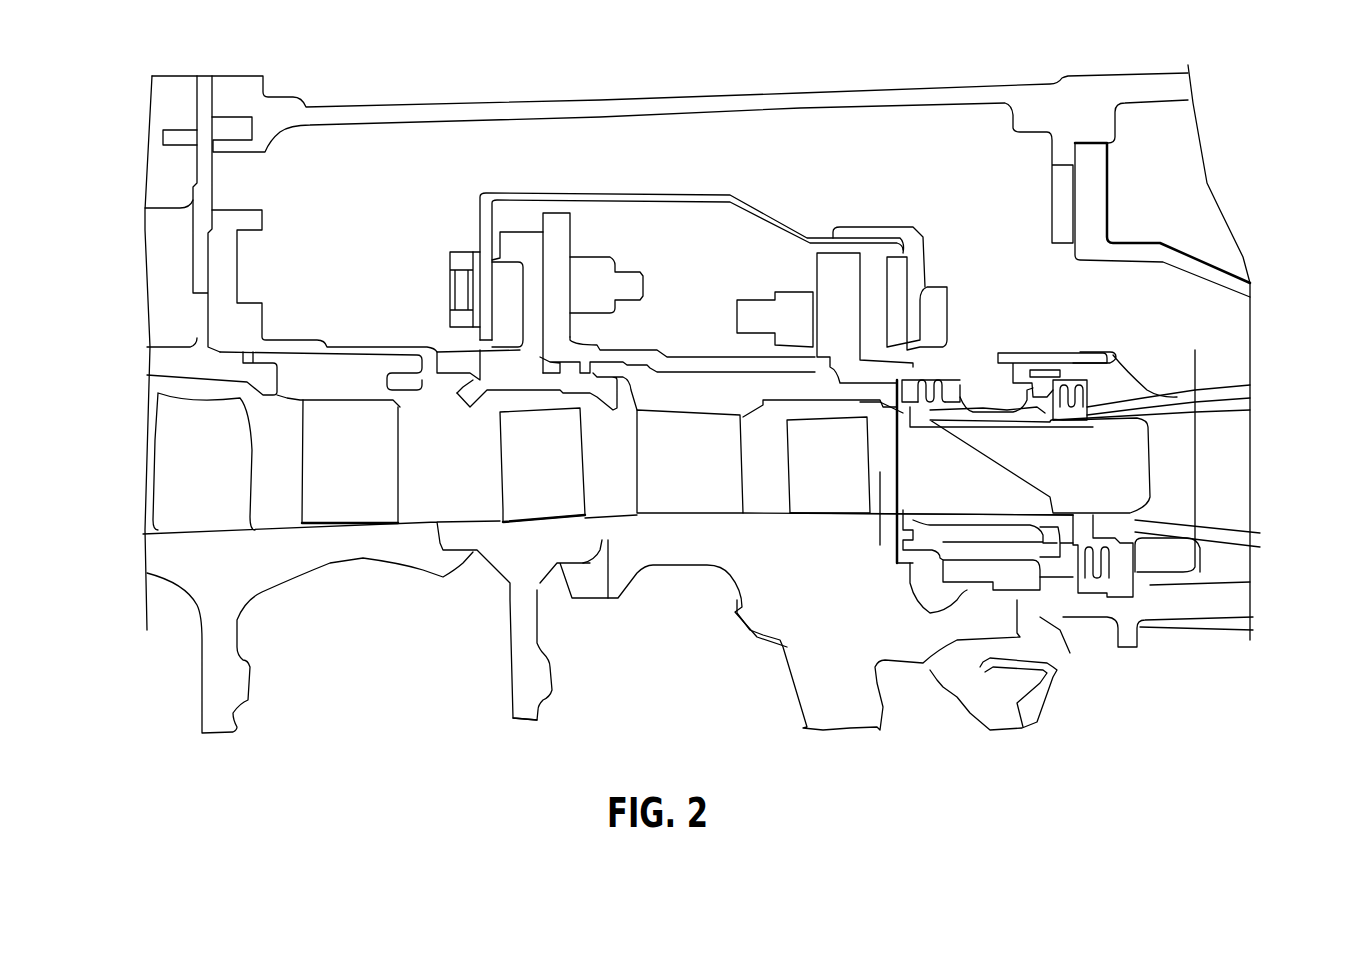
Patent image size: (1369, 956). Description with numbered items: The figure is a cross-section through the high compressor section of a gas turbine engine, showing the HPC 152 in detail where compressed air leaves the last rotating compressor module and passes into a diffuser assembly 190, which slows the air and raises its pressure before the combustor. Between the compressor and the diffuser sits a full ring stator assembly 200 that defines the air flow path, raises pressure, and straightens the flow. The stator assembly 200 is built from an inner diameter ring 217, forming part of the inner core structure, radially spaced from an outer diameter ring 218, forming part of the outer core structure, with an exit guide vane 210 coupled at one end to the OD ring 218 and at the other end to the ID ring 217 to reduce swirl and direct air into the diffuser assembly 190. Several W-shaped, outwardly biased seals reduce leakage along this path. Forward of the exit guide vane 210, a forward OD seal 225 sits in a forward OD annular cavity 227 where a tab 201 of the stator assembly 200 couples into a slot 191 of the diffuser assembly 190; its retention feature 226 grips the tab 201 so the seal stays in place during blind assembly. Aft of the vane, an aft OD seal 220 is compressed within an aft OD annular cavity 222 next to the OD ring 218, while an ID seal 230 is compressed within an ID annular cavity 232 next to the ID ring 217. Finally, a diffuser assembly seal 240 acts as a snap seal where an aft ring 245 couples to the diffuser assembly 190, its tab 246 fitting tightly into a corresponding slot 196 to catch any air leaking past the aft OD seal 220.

The high pressure compressor (HPC) 152 is at (112, 402).
The diffuser assembly 190 is at (1178, 455).
The slot 191 is at (957, 380).
The slot 196 is at (1090, 390).
The stator assembly 200 is at (880, 545).
The tab 201 is at (960, 380).
The exit guide vane 210 is at (1030, 472).
The inner diameter (ID) ring 217 is at (1013, 517).
The outer diameter (OD) ring 218 is at (1087, 395).
The aft OD seal 220 is at (1090, 397).
The aft OD annular cavity 222 is at (1090, 385).
The forward OD seal 225 is at (917, 380).
The retention feature 226 is at (947, 380).
The forward OD annular cavity 227 is at (937, 380).
The ID seal 230 is at (1103, 547).
The ID annular cavity 232 is at (1135, 595).
The diffuser assembly seal 240 is at (1240, 267).
The aft ring 245 is at (1063, 350).
The tab 246 is at (1107, 347).